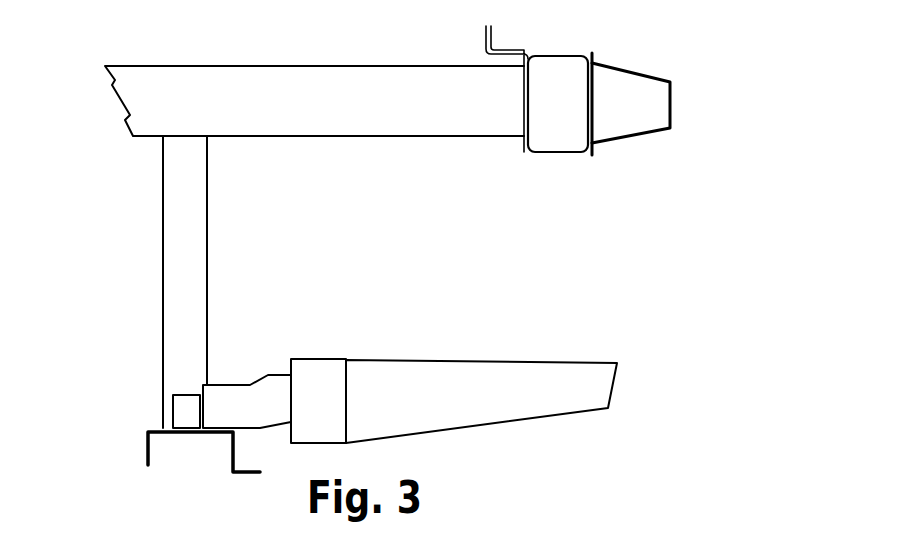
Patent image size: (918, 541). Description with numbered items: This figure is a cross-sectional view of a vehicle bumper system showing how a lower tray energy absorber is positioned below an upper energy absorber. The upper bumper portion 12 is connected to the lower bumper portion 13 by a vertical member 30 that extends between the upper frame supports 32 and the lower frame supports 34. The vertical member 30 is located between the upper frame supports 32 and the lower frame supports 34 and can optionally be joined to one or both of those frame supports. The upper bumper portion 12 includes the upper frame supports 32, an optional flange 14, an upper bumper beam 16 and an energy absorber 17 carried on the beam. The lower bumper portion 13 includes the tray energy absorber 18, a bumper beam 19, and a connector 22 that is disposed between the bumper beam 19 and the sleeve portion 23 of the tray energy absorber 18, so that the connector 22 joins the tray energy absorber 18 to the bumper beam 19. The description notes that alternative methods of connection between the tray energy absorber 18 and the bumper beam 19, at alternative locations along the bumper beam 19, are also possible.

The upper bumper portion 12 is at (724, 90).
The lower bumper portion 13 is at (668, 380).
The flange 14 is at (492, 44).
The upper bumper beam 16 is at (556, 94).
The energy absorber 17 is at (633, 72).
The tray energy absorber 18 is at (428, 397).
The bumper beam 19 is at (188, 407).
The connector 22 is at (230, 407).
The sleeve portion 23 is at (314, 390).
The vertical member 30 is at (188, 250).
The upper frame supports 32 is at (184, 100).
The lower frame supports 34 is at (175, 448).